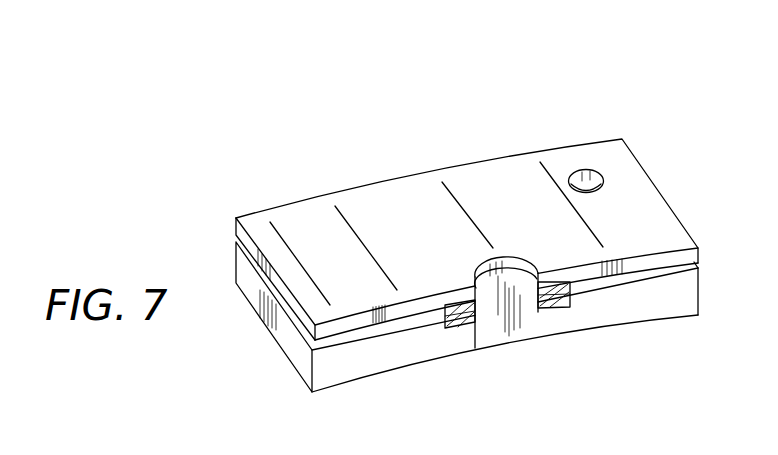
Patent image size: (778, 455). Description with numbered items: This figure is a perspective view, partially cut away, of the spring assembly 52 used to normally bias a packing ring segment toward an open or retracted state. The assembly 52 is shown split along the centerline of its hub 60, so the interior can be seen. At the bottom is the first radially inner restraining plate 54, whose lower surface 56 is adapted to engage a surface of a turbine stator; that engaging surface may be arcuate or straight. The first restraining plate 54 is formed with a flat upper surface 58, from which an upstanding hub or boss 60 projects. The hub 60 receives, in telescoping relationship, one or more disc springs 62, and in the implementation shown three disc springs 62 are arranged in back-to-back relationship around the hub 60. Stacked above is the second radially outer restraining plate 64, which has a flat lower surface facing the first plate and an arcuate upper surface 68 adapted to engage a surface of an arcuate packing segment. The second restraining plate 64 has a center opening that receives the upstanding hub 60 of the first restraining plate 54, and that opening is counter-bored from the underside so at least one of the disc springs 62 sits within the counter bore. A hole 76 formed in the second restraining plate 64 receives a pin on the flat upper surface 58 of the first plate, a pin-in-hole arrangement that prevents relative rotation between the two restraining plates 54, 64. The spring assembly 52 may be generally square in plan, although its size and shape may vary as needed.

The spring assembly 52 is at (507, 101).
The first radially inner restraining plate 54 is at (285, 382).
The lower surface 56 is at (405, 363).
The flat upper surface 58 is at (648, 277).
The upstanding hub 60 is at (525, 305).
The disc springs 62 is at (471, 328).
The second radially outer restraining plate 64 is at (300, 184).
The arcuate upper surface 68 is at (407, 207).
The hole 76 is at (594, 171).